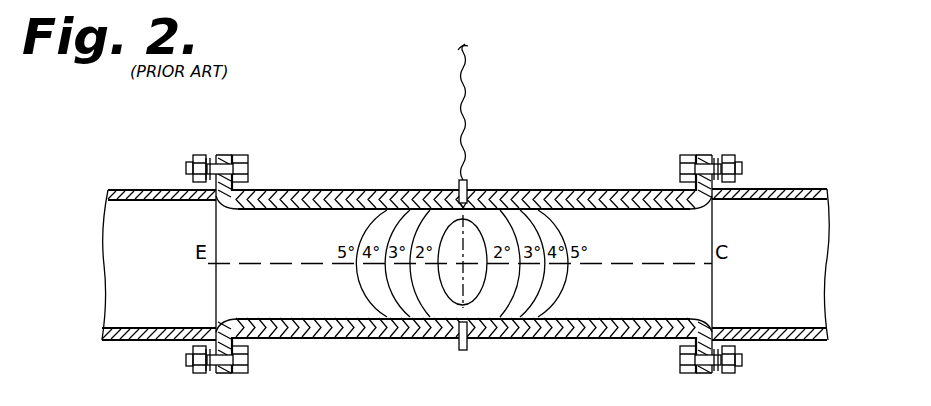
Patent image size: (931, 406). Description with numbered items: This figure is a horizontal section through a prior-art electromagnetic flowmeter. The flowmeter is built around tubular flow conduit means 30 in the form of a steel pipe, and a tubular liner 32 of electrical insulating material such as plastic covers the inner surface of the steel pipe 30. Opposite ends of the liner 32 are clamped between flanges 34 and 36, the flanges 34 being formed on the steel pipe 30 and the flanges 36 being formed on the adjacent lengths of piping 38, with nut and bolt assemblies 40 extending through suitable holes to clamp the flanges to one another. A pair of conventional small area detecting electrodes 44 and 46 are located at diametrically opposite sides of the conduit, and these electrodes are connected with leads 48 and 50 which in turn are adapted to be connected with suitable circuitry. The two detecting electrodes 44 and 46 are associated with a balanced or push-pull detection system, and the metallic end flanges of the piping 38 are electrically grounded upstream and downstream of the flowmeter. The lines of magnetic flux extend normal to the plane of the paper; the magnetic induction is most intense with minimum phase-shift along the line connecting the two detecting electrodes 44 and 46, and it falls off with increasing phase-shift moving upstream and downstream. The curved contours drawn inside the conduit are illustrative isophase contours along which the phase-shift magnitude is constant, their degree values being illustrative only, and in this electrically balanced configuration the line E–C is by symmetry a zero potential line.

The tubular flow conduit means 30 is at (348, 190).
The tubular liner 32 is at (276, 212).
The flange 34 is at (242, 155).
The flange 36 is at (201, 154).
The adjacent length of piping 38 is at (132, 190).
The nut and bolt assembly 40 is at (257, 182).
The detecting electrode 44 is at (468, 185).
The detecting electrode 46 is at (466, 352).
The lead 48 is at (469, 47).
The lead 50 is at (459, 49).